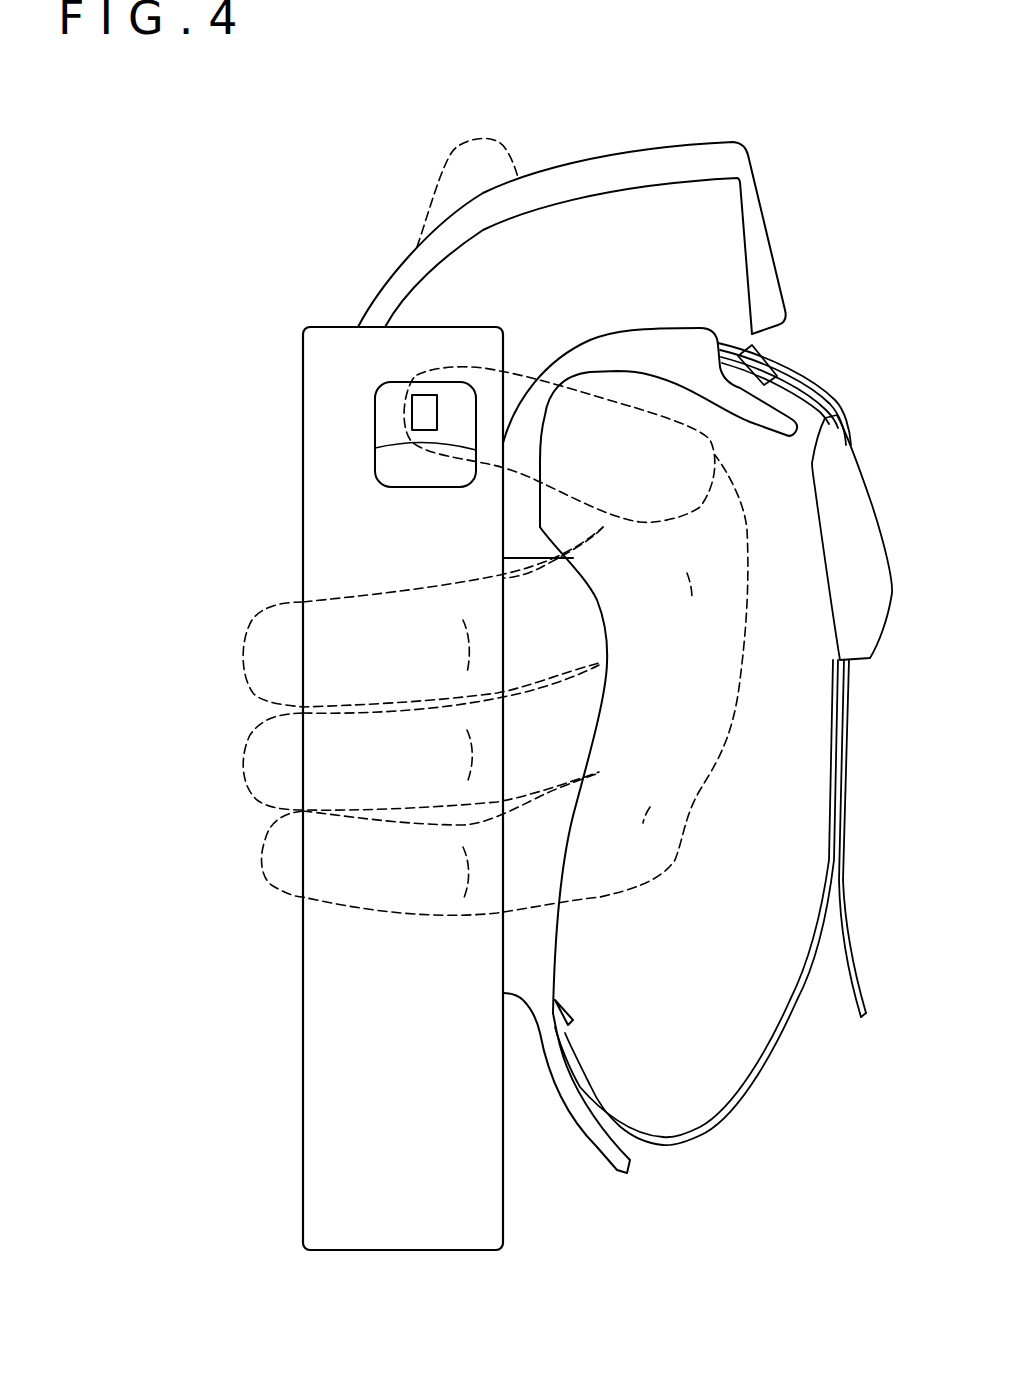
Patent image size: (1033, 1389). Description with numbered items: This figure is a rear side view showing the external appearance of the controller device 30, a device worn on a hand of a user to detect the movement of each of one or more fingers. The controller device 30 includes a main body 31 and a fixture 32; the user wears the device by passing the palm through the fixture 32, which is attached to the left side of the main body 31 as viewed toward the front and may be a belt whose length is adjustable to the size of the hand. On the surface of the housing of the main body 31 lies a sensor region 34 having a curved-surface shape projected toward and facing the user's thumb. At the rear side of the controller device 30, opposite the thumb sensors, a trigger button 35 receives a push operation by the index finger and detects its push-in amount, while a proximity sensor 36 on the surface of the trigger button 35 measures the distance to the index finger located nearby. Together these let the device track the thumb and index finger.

The controller device 30 is at (434, 848).
The main body 31 is at (490, 1193).
The fixture 32 is at (842, 927).
The sensor region 34 is at (615, 214).
The trigger button 35 is at (375, 467).
The proximity sensor 36 is at (412, 403).